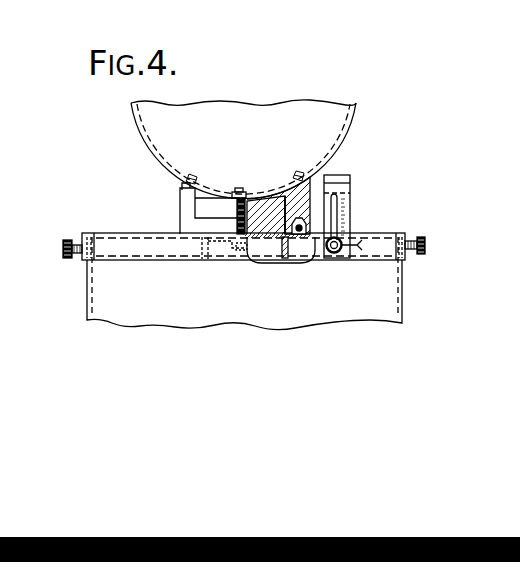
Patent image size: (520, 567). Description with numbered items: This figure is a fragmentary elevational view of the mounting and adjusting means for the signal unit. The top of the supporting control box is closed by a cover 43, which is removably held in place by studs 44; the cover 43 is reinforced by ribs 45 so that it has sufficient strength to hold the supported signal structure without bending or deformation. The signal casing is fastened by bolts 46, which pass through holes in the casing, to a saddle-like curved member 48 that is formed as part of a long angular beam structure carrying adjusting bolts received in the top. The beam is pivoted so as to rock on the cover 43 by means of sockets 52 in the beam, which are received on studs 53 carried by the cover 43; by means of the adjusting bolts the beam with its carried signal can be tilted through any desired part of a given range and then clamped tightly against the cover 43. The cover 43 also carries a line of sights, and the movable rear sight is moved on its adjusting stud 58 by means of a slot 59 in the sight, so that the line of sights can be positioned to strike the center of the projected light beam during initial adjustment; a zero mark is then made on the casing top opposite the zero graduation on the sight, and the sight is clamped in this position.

The cover 43 is at (403, 235).
The studs 44 is at (63, 247).
The ribs 45 is at (280, 251).
The bolts 46 is at (182, 188).
The saddle-like curved member 48 is at (320, 180).
The sockets 52 is at (292, 217).
The studs 53 is at (299, 238).
The adjusting stud 58 is at (338, 252).
The slot 59 is at (337, 198).